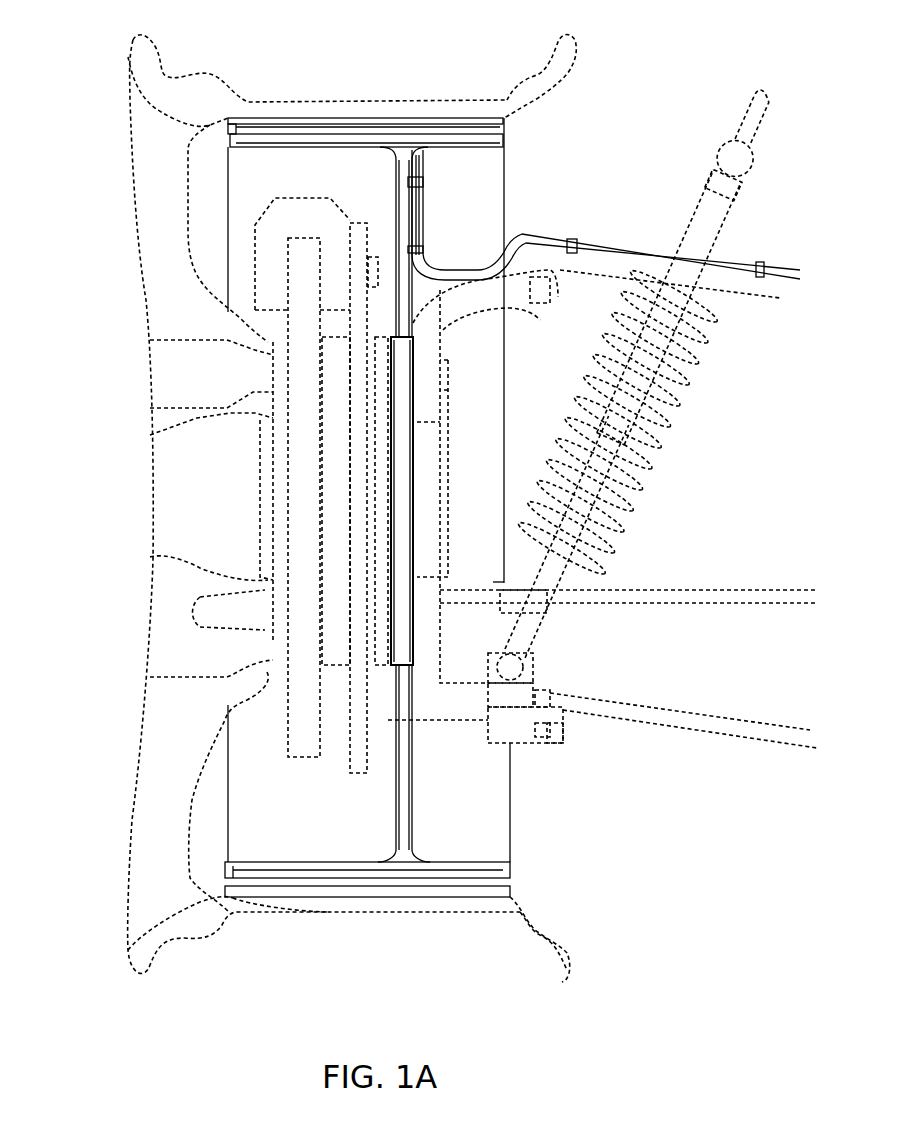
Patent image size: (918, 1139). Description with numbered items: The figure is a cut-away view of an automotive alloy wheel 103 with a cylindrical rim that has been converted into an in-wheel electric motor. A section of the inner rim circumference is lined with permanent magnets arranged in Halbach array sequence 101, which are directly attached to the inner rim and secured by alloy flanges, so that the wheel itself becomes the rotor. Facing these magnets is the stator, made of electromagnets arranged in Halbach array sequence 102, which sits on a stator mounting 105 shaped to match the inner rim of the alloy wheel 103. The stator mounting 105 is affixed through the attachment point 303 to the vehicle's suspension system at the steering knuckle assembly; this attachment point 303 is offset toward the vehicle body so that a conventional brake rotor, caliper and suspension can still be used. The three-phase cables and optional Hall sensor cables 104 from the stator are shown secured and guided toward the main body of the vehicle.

The permanent magnets arranged in Halbach array sequence 101 is at (313, 123).
The electromagnets arranged in Halbach array sequence 102 is at (443, 137).
The alloy wheel 103 is at (513, 100).
The three-phase cables and optional Hall sensor cables 104 is at (520, 243).
The stator mounting 105 is at (460, 790).
The attachment point for the stator mounting 303 is at (397, 613).